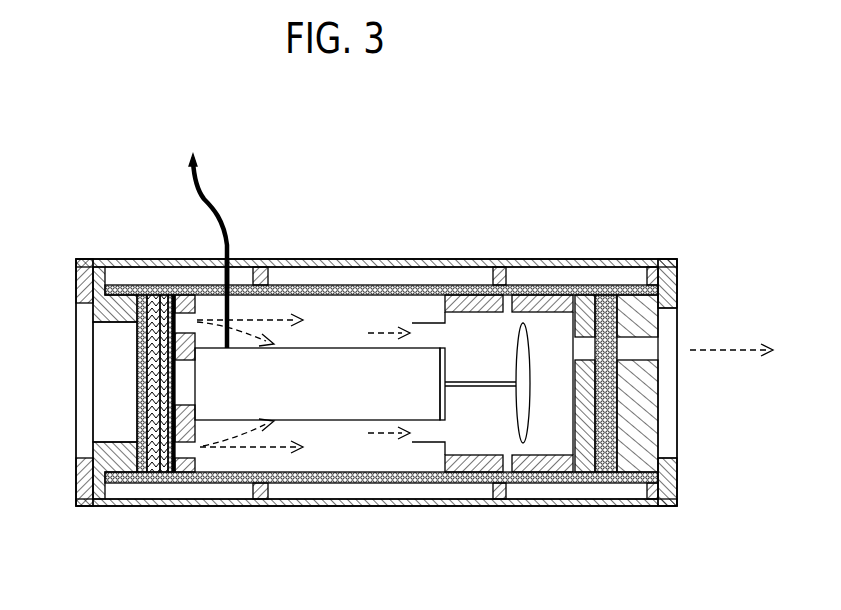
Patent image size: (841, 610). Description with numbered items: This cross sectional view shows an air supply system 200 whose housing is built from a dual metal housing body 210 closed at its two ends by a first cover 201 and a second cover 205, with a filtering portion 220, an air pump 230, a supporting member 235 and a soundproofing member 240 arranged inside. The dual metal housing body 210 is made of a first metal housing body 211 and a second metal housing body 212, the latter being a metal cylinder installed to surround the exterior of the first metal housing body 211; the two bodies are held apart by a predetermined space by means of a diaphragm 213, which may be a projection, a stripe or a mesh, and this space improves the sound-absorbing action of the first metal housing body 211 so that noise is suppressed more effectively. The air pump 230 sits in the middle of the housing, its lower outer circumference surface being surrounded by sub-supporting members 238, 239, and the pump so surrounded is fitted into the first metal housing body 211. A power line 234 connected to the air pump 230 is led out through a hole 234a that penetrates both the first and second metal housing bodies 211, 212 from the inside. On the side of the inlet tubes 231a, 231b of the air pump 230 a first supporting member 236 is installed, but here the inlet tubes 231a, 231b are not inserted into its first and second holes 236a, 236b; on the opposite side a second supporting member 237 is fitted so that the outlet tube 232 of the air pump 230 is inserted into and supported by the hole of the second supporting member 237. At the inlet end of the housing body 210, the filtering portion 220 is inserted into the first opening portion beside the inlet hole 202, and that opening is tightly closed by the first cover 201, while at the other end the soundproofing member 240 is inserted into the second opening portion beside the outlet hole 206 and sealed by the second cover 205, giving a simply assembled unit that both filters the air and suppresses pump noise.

The air supply system 200 is at (82, 98).
The first cover 201 is at (76, 281).
The inlet hole 202 is at (100, 360).
The second cover 205 is at (677, 293).
The outlet hole 206 is at (660, 320).
The dual metal housing body 210 is at (506, 252).
The first metal housing body 211 is at (368, 283).
The second metal housing body 212 is at (335, 264).
The diaphragm 213 is at (272, 268).
The filtering portion 220 is at (131, 388).
The air pump 230 is at (556, 308).
The inlet tube 231a is at (426, 333).
The inlet tube 231b is at (427, 432).
The outlet tube 232 is at (583, 345).
The power line 234 is at (187, 165).
The hole 234a is at (237, 257).
The supporting member 235 is at (557, 486).
The first supporting member 236 is at (140, 418).
The first hole 236a is at (197, 312).
The second hole 236b is at (188, 451).
The second supporting member 237 is at (601, 466).
The sub-supporting member 238 is at (467, 470).
The sub-supporting member 239 is at (529, 466).
The soundproofing member 240 is at (660, 457).